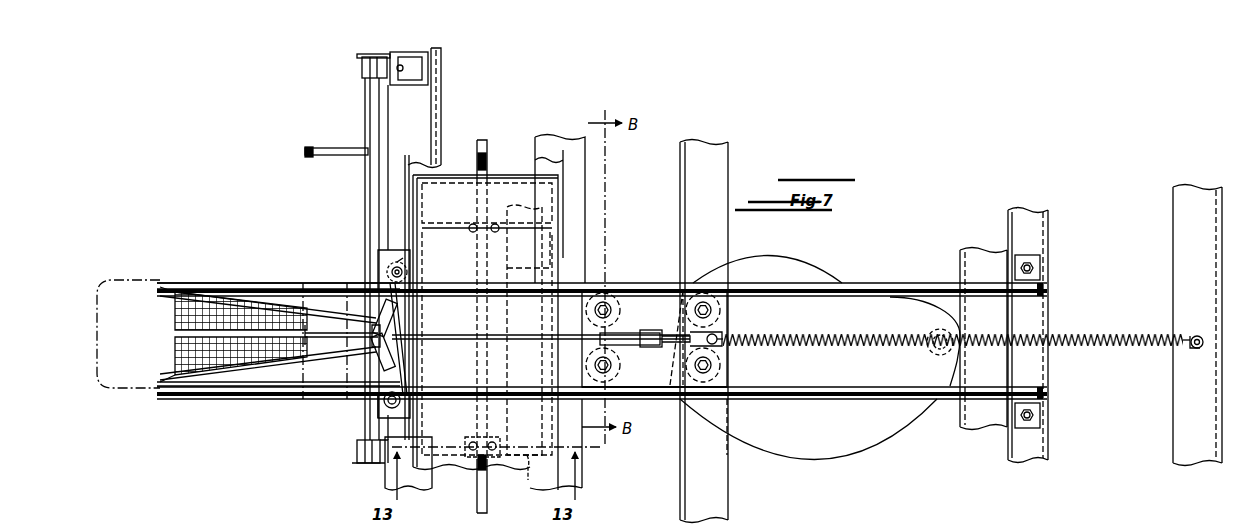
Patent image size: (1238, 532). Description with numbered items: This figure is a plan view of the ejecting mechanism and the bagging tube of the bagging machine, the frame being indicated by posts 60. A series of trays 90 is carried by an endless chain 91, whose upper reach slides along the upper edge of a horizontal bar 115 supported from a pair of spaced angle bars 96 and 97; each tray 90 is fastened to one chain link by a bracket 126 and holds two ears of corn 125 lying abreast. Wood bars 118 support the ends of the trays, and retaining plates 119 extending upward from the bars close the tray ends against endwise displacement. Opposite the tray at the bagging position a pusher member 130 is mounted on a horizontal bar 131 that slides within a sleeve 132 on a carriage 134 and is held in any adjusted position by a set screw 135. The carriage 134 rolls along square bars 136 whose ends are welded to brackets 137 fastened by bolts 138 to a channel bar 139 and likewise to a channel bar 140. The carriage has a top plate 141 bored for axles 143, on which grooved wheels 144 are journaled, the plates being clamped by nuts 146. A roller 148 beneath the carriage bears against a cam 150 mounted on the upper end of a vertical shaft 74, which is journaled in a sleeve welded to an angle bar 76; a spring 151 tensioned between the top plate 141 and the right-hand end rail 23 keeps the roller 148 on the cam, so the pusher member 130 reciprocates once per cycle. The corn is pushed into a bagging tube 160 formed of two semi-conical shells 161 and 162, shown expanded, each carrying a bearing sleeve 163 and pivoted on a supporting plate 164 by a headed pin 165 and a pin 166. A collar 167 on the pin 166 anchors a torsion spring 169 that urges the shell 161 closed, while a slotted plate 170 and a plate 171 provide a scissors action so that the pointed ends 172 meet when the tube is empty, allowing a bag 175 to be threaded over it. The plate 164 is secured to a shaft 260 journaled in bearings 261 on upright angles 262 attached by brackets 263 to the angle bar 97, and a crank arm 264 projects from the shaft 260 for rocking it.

The right-hand end rail 23 is at (1182, 387).
The support post 60 is at (730, 155).
The vertical shaft 74 is at (937, 332).
The angle bar 76 is at (985, 250).
The tray 90 is at (431, 178).
The endless chain 91 is at (478, 493).
The angle bar 96 is at (560, 135).
The angle bar 97 is at (425, 105).
The horizontal bar 115 is at (495, 142).
The wood bar 118 is at (445, 172).
The retaining plate 119 is at (397, 158).
The ear of corn 125 is at (170, 345).
The bracket 126 is at (465, 440).
The pusher member 130 is at (303, 322).
The horizontal bar 131 is at (434, 333).
The sleeve 132 is at (628, 337).
The carriage 134 is at (652, 286).
The set screw 135 is at (622, 336).
The bar 136 is at (870, 282).
The bracket 137 is at (1040, 258).
The bolt 138 is at (1033, 268).
The channel bar 139 is at (1040, 212).
The channel bar 140 is at (528, 462).
The top plate 141 is at (645, 378).
The axle 143 is at (712, 310).
The grooved wheel 144 is at (727, 352).
The nut 146 is at (712, 367).
The roller 148 is at (660, 352).
The cam 150 is at (777, 262).
The spring 151 is at (1072, 338).
The bagging tube 160 is at (297, 276).
The semi-conical shell 161 is at (226, 289).
The semi-conical shell 162 is at (272, 375).
The bearing sleeve 163 is at (385, 400).
The supporting plate 164 is at (380, 415).
The headed pin 165 is at (400, 404).
The pin 166 is at (386, 271).
The collar 167 is at (405, 268).
The torsion spring 169 is at (402, 270).
The slotted plate 170 is at (392, 313).
The plate 171 is at (392, 355).
The pointed end 172 is at (170, 288).
The bag 175 is at (113, 279).
The shaft 260 is at (365, 185).
The bearing 261 is at (362, 70).
The upright angle 262 is at (358, 56).
The bracket 263 is at (428, 68).
The crank arm 264 is at (320, 148).